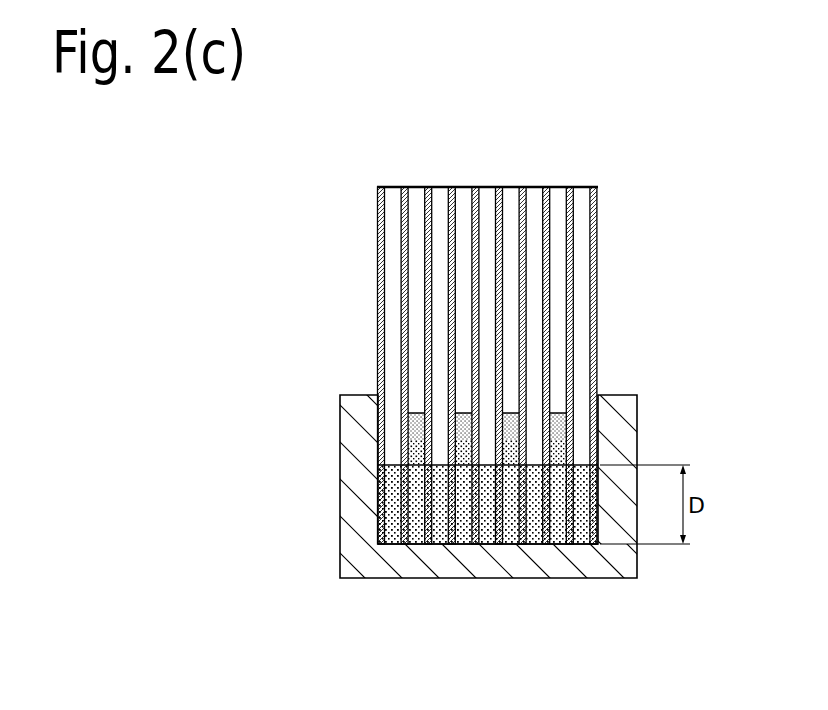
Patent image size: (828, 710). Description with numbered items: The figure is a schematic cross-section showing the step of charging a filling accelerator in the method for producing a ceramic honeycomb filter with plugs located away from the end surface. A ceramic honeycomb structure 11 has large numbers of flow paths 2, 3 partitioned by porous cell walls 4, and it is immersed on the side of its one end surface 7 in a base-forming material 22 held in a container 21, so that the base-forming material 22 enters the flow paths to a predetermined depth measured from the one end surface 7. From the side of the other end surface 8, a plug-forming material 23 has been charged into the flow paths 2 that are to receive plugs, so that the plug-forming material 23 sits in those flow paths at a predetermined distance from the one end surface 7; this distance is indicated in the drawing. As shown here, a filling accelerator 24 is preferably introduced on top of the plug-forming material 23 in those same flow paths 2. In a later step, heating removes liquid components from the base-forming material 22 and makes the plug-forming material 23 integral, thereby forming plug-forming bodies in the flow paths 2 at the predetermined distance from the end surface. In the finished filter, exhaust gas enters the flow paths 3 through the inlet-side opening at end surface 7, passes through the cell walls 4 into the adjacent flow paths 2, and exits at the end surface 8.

The flow paths 2 is at (413, 237).
The flow paths 3 is at (392, 290).
The cell walls 4 is at (574, 245).
The one end surface 7 is at (540, 546).
The other end surface 8 is at (558, 185).
The ceramic honeycomb structure 11 is at (485, 332).
The container 21 is at (350, 466).
The base-forming material 22 is at (421, 524).
The plug-forming material 23 is at (570, 438).
The filling accelerator 24 is at (557, 417).